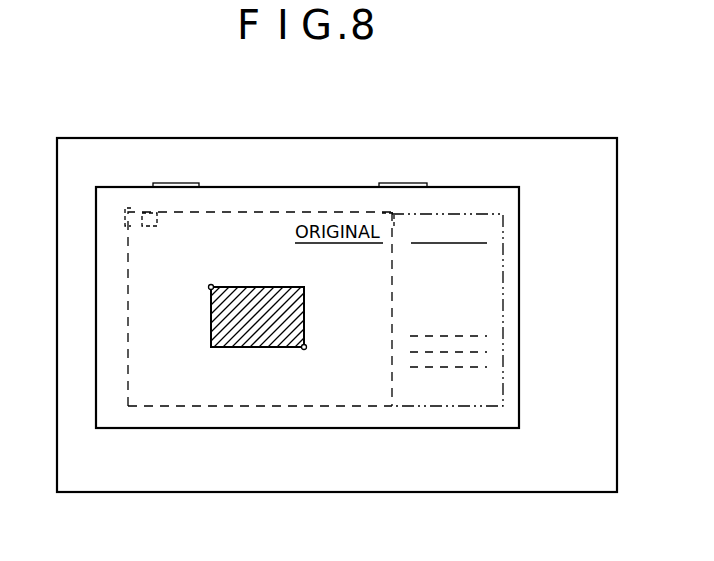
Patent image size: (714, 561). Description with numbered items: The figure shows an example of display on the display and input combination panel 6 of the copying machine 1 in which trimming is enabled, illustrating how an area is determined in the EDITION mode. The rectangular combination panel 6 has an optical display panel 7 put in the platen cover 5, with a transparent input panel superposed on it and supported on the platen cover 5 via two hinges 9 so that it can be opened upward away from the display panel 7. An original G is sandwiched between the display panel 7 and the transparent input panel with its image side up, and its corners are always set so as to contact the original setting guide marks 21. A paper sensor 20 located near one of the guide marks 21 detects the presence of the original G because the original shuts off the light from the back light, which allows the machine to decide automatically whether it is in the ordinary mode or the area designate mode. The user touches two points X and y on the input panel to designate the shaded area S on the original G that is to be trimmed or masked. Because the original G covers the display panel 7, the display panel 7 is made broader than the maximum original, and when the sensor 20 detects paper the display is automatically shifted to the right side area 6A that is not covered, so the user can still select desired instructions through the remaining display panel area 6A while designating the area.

The copying machine 1 is at (241, 137).
The platen cover 5 is at (56, 176).
The combination panel 6 is at (152, 315).
The remaining display panel area 6A is at (488, 291).
The optical display panel 7 is at (107, 377).
The hinges 9 is at (186, 183).
The paper sensor 20 is at (155, 212).
The original setting guide marks 21 is at (126, 216).
The shaded area S is at (262, 290).
The point x X is at (211, 284).
The point y is at (307, 349).
The original G is at (262, 398).